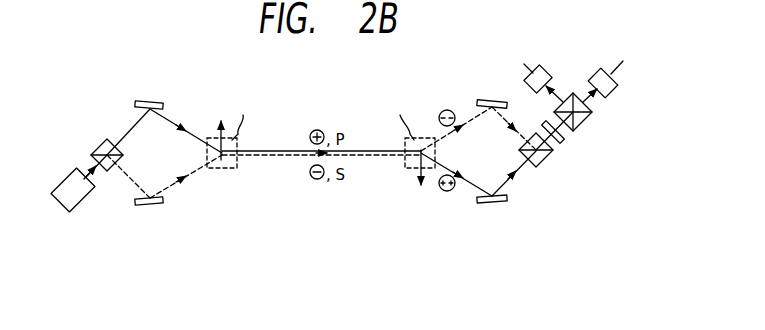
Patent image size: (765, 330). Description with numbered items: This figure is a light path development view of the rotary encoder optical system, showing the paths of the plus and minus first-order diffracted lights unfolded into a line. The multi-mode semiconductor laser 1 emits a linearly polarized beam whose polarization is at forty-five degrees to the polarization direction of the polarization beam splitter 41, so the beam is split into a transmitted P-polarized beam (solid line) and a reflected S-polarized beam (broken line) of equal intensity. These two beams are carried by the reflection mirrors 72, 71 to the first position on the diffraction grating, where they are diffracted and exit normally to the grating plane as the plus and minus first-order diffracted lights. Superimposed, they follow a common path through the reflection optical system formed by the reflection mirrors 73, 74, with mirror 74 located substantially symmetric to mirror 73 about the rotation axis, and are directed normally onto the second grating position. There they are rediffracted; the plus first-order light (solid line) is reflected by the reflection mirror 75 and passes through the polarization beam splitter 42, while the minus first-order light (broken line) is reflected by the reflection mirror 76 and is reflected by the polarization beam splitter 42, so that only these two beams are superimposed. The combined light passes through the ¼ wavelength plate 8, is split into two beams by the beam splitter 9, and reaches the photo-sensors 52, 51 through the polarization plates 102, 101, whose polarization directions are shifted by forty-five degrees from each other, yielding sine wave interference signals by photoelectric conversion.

The multi-mode semiconductor laser 1 is at (83, 207).
The polarization beam splitter 41 is at (96, 143).
The reflection mirror 72 is at (152, 101).
The reflection mirror 71 is at (151, 206).
The reflection mirror 73 is at (224, 170).
The reflection mirror 74 is at (412, 170).
The reflection mirror 76 is at (488, 99).
The reflection mirror 75 is at (490, 204).
The polarization beam splitter 42 is at (545, 163).
The ¼ wavelength plate 8 is at (563, 142).
The beam splitter 9 is at (556, 100).
The polarization plate 101 is at (573, 92).
The polarization plate 102 is at (556, 108).
The photo-sensor 52 is at (542, 64).
The photo-sensor 51 is at (603, 67).